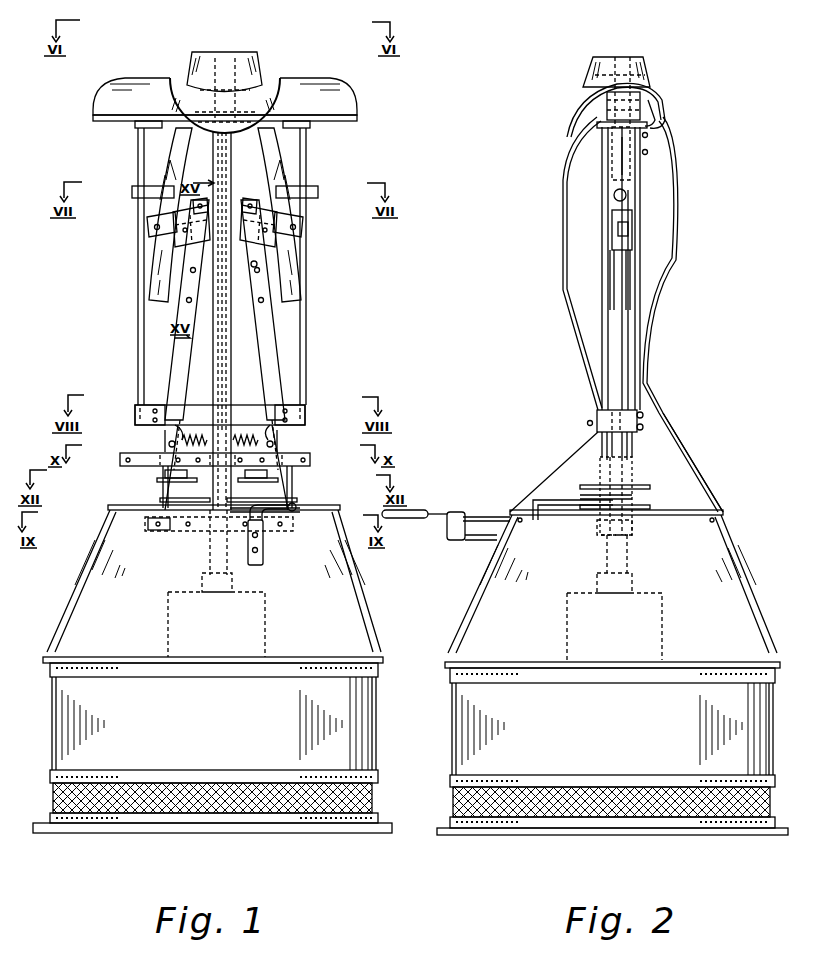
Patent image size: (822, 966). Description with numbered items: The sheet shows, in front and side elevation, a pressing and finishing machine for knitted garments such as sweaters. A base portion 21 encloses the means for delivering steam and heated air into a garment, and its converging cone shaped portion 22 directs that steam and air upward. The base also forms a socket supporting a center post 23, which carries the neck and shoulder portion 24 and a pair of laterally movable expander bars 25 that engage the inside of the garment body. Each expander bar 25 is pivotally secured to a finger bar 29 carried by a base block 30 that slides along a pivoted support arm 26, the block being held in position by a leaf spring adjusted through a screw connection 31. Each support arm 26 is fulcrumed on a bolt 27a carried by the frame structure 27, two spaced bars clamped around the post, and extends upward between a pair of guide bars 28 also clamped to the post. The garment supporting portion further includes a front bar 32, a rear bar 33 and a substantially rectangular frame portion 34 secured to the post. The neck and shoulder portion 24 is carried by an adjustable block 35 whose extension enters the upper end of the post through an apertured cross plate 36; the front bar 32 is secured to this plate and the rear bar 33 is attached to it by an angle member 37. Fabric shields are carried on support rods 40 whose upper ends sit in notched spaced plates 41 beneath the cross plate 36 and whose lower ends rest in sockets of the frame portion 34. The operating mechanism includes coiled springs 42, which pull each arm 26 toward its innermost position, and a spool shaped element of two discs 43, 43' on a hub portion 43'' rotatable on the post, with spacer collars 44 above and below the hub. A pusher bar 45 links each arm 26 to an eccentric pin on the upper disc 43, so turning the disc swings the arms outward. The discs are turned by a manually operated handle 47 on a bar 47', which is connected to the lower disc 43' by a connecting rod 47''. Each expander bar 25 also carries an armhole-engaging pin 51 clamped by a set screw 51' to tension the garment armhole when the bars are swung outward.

In FIG. 1, the base portion 21 is at (52, 714).
In FIG. 2, the base portion 21 is at (452, 714).
In FIG. 1, the cone shaped portion 22 is at (85, 575).
In FIG. 2, the cone shaped portion 22 is at (482, 575).
In FIG. 1, the center post 23 is at (213, 372).
In FIG. 2, the center post 23 is at (640, 448).
In FIG. 1, the neck and shoulder portion 24 is at (320, 78).
In FIG. 2, the neck and shoulder portion 24 is at (648, 92).
In FIG. 1, the expander bar 25 is at (152, 265).
In FIG. 2, the expander bar 25 is at (624, 266).
In FIG. 1, the support arm 26 is at (178, 358).
In FIG. 2, the support arm 26 is at (625, 340).
In FIG. 1, the frame structure 27 is at (182, 530).
In FIG. 2, the frame structure 27 is at (598, 528).
In FIG. 1, the bolt 27a is at (148, 524).
In FIG. 1, the guide bars 28 is at (308, 456).
In FIG. 2, the guide bars 28 is at (606, 458).
In FIG. 1, the finger bar 29 is at (150, 222).
In FIG. 1, the base block 30 is at (234, 210).
In FIG. 1, the screw connection 31 is at (257, 264).
In FIG. 1, the front bar 32 is at (231, 376).
In FIG. 2, the front bar 32 is at (563, 288).
In FIG. 2, the rear bar 33 is at (664, 290).
In FIG. 1, the frame portion 34 is at (305, 410).
In FIG. 2, the frame portion 34 is at (645, 418).
In FIG. 1, the adjustable block 35 is at (195, 82).
In FIG. 2, the adjustable block 35 is at (607, 108).
In FIG. 1, the cross plate 36 is at (357, 120).
In FIG. 2, the cross plate 36 is at (660, 128).
In FIG. 2, the angle member 37 is at (660, 112).
In FIG. 1, the support rods 40 is at (138, 305).
In FIG. 2, the support rods 40 is at (602, 228).
In FIG. 1, the spaced plates 41 is at (138, 128).
In FIG. 1, the coiled springs 42 is at (178, 432).
In FIG. 1, the upper disc 43 is at (193, 487).
In FIG. 2, the upper disc 43 is at (628, 474).
In FIG. 1, the lower disc 43' is at (167, 490).
In FIG. 2, the lower disc 43' is at (635, 496).
In FIG. 1, the hub portion 43'' is at (278, 485).
In FIG. 2, the hub portion 43'' is at (589, 488).
In FIG. 2, the spacer collars 44 is at (612, 482).
In FIG. 1, the pusher bar 45 is at (170, 474).
In FIG. 1, the handle 47 is at (285, 534).
In FIG. 2, the handle 47 is at (414, 498).
In FIG. 2, the bar 47' is at (478, 512).
In FIG. 1, the connecting rod 47'' is at (294, 497).
In FIG. 2, the connecting rod 47'' is at (554, 487).
In FIG. 1, the armhole-engaging pin 51 is at (221, 178).
In FIG. 2, the armhole-engaging pin 51 is at (659, 194).
In FIG. 1, the set screw 51' is at (225, 161).